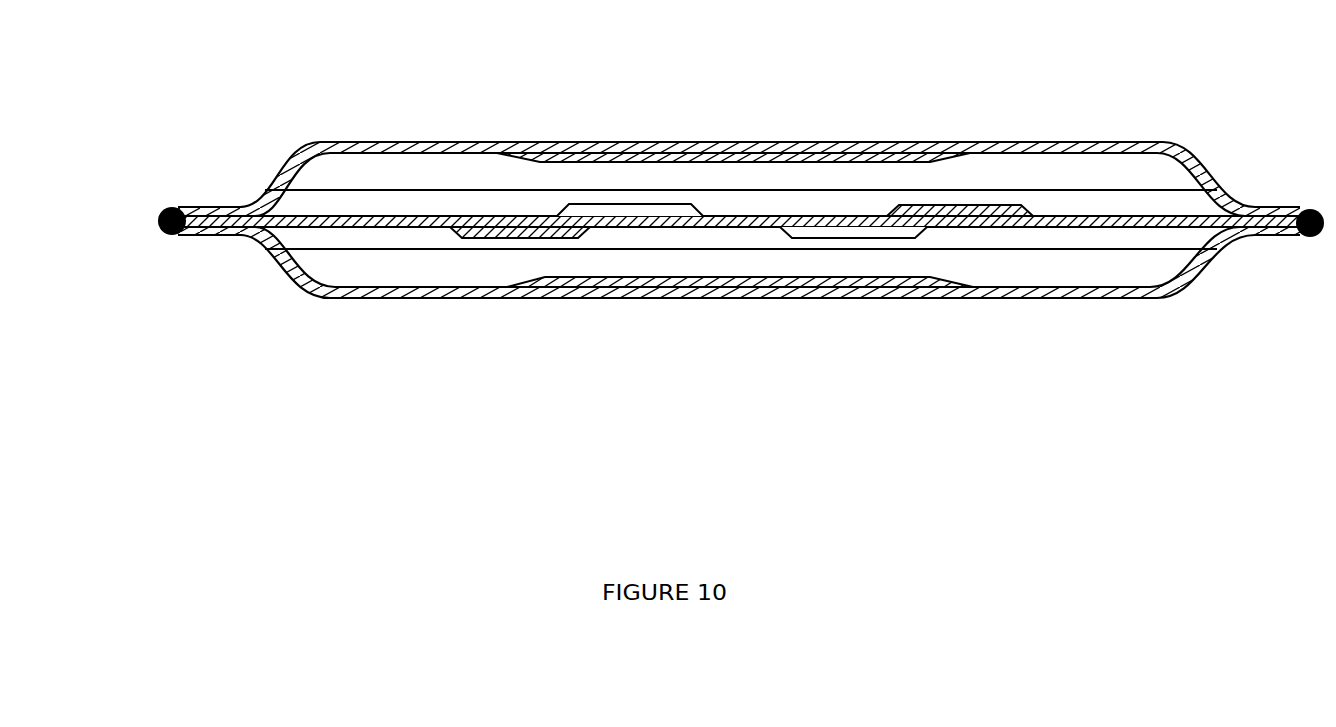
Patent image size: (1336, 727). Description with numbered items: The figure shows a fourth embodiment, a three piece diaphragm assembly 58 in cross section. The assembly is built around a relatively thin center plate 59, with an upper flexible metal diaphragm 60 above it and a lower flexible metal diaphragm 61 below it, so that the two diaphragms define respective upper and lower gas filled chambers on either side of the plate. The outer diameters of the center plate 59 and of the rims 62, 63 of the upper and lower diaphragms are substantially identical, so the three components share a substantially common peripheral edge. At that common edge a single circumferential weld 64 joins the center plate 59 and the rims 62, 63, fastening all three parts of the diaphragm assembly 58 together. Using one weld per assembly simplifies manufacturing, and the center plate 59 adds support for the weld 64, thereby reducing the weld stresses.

The three piece diaphragm assembly 58 is at (782, 76).
The center plate 59 is at (392, 217).
The upper flexible metal diaphragm 60 is at (367, 143).
The lower flexible metal diaphragm 61 is at (358, 298).
The rim of upper diaphragm 62 is at (192, 207).
The rim of lower diaphragm 63 is at (192, 238).
The weld 64 is at (160, 230).